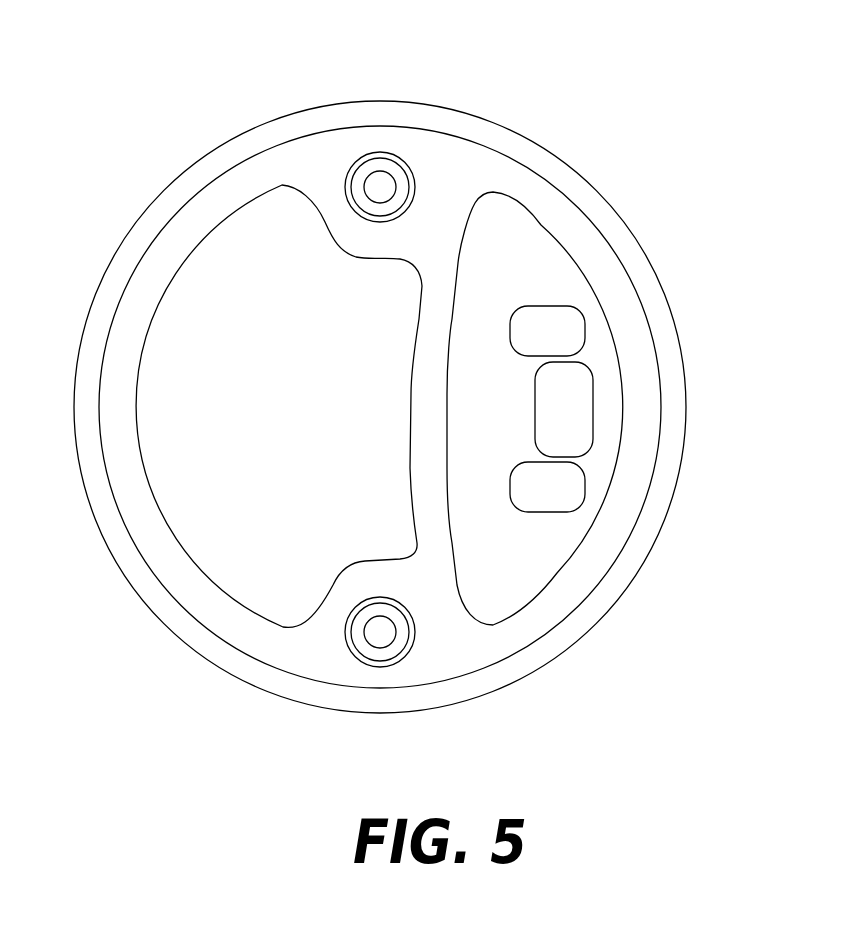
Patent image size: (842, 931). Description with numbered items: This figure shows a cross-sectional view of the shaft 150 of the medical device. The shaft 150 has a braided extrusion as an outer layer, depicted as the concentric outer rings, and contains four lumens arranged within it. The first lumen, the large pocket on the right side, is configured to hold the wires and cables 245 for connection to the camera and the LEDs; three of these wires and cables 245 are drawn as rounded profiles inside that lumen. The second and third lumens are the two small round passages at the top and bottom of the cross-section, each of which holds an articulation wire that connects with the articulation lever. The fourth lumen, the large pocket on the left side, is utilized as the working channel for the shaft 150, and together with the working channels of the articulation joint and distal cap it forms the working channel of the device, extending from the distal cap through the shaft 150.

The shaft 150 is at (105, 140).
The wires and cables 245 is at (587, 328).